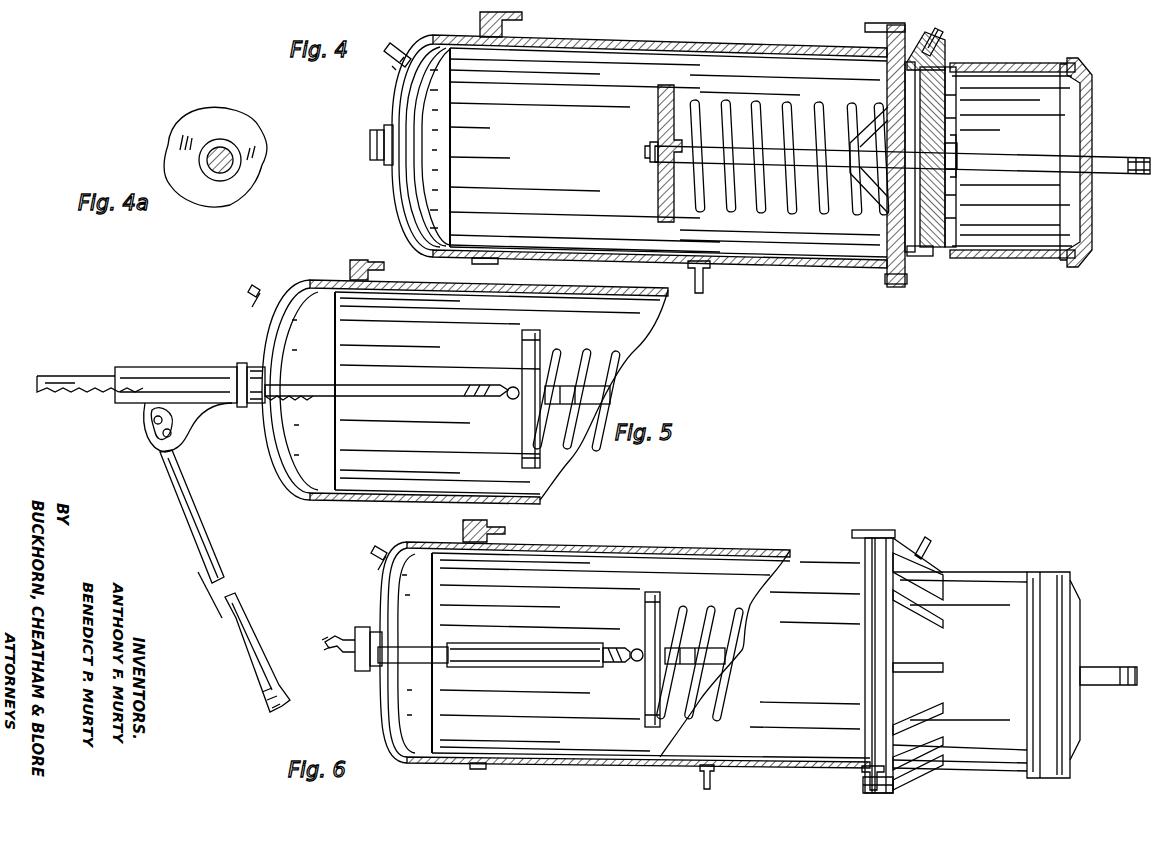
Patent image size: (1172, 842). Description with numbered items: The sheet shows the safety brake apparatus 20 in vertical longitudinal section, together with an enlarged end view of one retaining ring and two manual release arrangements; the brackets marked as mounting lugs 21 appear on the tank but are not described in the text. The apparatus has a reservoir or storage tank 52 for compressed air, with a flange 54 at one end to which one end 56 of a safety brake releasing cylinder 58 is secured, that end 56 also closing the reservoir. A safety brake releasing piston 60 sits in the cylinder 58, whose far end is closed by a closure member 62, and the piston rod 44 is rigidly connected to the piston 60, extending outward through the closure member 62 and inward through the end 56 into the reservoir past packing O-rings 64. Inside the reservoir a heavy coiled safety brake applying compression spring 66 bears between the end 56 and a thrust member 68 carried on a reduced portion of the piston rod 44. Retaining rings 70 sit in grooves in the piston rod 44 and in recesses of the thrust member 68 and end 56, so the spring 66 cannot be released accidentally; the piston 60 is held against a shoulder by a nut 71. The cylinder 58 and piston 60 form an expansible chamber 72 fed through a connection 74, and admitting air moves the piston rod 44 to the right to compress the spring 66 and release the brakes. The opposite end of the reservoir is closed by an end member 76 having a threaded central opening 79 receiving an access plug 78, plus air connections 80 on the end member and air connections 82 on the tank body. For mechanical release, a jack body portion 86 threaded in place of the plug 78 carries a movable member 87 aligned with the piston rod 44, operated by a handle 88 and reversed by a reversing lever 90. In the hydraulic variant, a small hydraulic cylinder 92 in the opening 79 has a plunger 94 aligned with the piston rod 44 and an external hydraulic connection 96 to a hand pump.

In FIG. 4, the safety brake apparatus 20 is at (766, 267).
In FIG. 5, the safety brake apparatus 20 is at (370, 507).
In FIG. 6, the safety brake apparatus 20 is at (699, 536).
In FIG. 4, the mounting bracket 21 is at (890, 26).
In FIG. 5, the mounting bracket 21 is at (381, 270).
In FIG. 6, the mounting bracket 21 is at (884, 524).
In FIG. 4, the piston rod 44 is at (1085, 165).
In FIG. 4a, the piston rod 44 is at (218, 173).
In FIG. 5, the piston rod 44 is at (590, 405).
In FIG. 6, the piston rod 44 is at (716, 668).
In FIG. 4, the reservoir or storage tank 52 is at (812, 266).
In FIG. 5, the reservoir or storage tank 52 is at (543, 500).
In FIG. 6, the reservoir or storage tank 52 is at (580, 768).
In FIG. 4, the flange 54 is at (888, 274).
In FIG. 4, the end of cylinder 56 is at (902, 276).
In FIG. 4, the safety brake releasing cylinder 58 is at (1028, 72).
In FIG. 6, the safety brake releasing cylinder 58 is at (985, 752).
In FIG. 4, the safety brake releasing piston 60 is at (926, 256).
In FIG. 4, the closure member 62 is at (1080, 220).
In FIG. 4, the O-rings 64 is at (876, 132).
In FIG. 4, the safety brake applying compression spring 66 is at (788, 118).
In FIG. 5, the safety brake applying compression spring 66 is at (560, 352).
In FIG. 6, the safety brake applying compression spring 66 is at (700, 650).
In FIG. 4, the thrust member 68 is at (658, 105).
In FIG. 4a, the thrust member 68 is at (255, 160).
In FIG. 5, the thrust member 68 is at (523, 351).
In FIG. 6, the thrust member 68 is at (600, 586).
In FIG. 4, the retaining rings 70 is at (656, 142).
In FIG. 4a, the retaining rings 70 is at (205, 172).
In FIG. 4, the nut 71 is at (956, 147).
In FIG. 4, the expansible chamber 72 is at (941, 139).
In FIG. 4, the connection 74 is at (934, 30).
In FIG. 4, the end member 76 is at (400, 97).
In FIG. 5, the end member 76 is at (264, 343).
In FIG. 6, the end member 76 is at (382, 600).
In FIG. 4, the access plug 78 is at (369, 152).
In FIG. 4, the opening 79 is at (399, 168).
In FIG. 5, the opening 79 is at (262, 404).
In FIG. 6, the opening 79 is at (384, 664).
In FIG. 4, the air connections 80 is at (399, 57).
In FIG. 4, the air connections 82 is at (703, 280).
In FIG. 5, the body portion 86 is at (135, 373).
In FIG. 5, the movable member 87 is at (409, 383).
In FIG. 5, the handle 88 is at (194, 539).
In FIG. 5, the reversing lever 90 is at (148, 425).
In FIG. 6, the hydraulic cylinder 92 is at (520, 650).
In FIG. 6, the plunger 94 is at (612, 648).
In FIG. 6, the hydraulic connection 96 is at (330, 655).